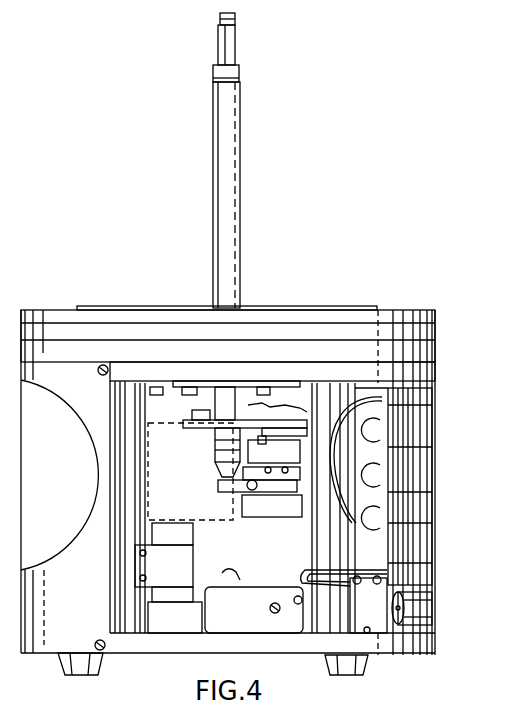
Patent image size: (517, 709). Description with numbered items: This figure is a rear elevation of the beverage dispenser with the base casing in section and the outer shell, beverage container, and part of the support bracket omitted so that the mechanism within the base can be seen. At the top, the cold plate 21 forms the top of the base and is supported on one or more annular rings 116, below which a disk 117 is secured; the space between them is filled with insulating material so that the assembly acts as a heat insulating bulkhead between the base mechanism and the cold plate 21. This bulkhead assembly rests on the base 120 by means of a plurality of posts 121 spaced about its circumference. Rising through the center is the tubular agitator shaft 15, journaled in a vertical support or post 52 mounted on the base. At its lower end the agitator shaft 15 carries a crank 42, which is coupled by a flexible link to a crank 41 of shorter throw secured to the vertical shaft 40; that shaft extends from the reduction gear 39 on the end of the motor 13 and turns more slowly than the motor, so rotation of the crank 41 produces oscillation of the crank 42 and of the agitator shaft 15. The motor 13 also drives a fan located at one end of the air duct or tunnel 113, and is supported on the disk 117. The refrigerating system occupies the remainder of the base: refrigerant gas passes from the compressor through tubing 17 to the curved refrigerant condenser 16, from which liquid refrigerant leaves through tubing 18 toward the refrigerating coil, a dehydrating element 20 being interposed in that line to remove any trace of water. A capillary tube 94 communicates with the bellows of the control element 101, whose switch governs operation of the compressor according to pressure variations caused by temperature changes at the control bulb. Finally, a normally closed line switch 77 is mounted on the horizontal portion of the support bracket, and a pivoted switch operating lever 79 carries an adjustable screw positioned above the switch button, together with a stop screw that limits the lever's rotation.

The agitator shaft 15 is at (235, 50).
The vertical support or post 52 is at (242, 220).
The cold plate 21 is at (295, 308).
The annular rings 116 is at (254, 345).
The disk 117 is at (437, 370).
The refrigerant condenser 16 is at (428, 466).
The tubing 17 is at (341, 410).
The crank 41 is at (277, 419).
The vertical shaft 40 is at (284, 433).
The crank 42 is at (192, 426).
The reduction gear 39 is at (257, 452).
The switch operating lever 79 is at (218, 485).
The switch 77 is at (283, 517).
The posts 121 is at (322, 540).
The motor 13 is at (227, 544).
The tubing 18 is at (341, 566).
The capillary tube 94 is at (240, 572).
The control element 101 is at (254, 610).
The air duct or tunnel 113 is at (53, 558).
The dehydrating element 20 is at (423, 610).
The base 120 is at (295, 653).